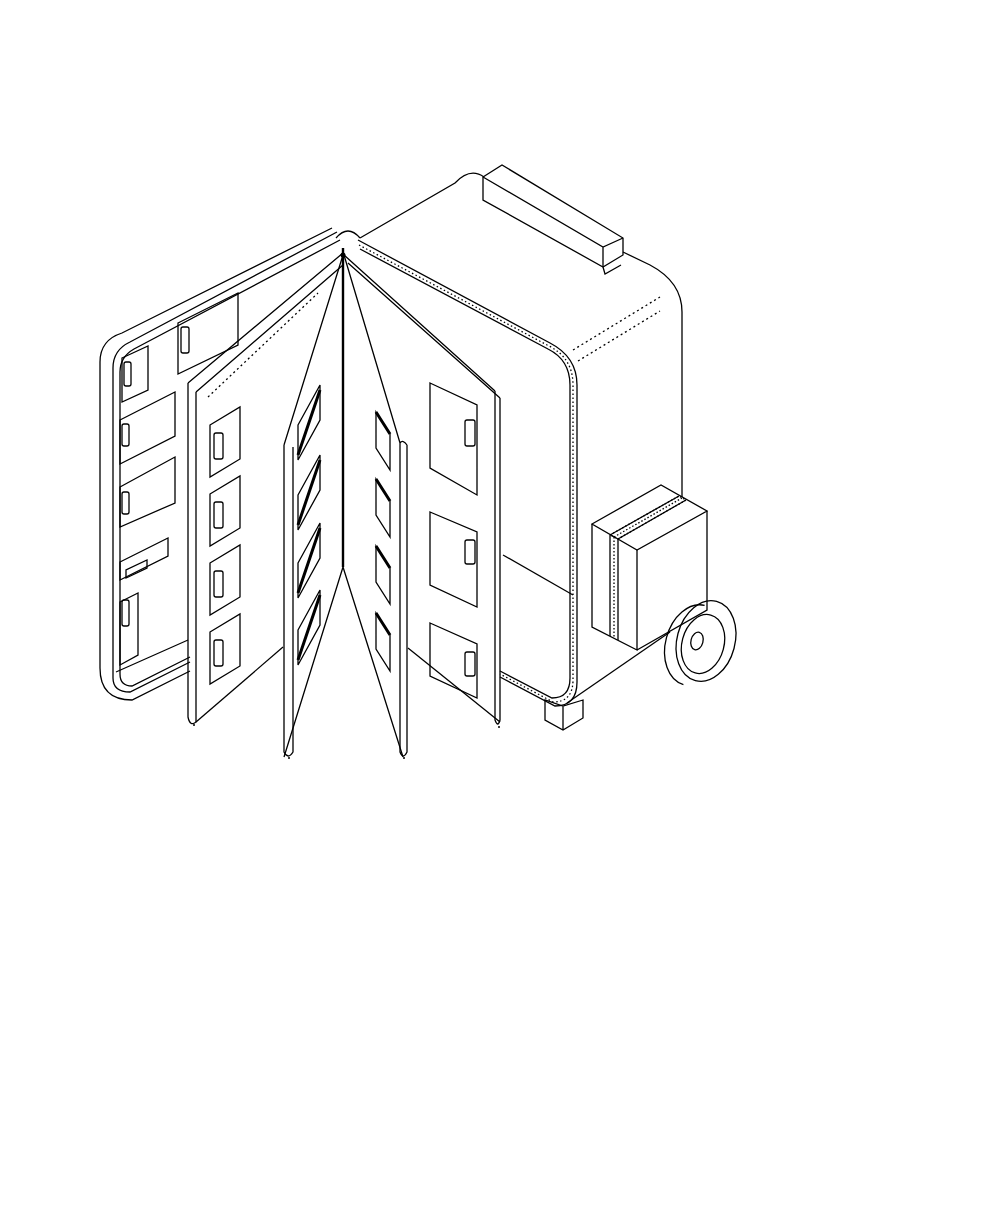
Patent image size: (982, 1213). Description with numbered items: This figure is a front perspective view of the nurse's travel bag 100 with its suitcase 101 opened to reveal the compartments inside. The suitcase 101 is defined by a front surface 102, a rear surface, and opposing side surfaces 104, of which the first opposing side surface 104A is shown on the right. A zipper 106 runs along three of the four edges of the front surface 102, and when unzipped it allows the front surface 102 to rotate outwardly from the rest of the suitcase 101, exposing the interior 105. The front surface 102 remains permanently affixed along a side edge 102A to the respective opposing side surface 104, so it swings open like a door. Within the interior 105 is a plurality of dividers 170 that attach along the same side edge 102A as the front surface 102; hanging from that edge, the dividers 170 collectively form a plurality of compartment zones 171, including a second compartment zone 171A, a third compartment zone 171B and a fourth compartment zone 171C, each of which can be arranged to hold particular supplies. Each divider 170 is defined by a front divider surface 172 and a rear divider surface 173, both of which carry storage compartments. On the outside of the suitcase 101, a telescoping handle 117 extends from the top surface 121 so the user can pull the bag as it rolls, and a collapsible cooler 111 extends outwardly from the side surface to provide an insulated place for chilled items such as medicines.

The nurse's travel bag 100 is at (114, 113).
The suitcase 101 is at (641, 263).
The front surface 102 is at (104, 347).
The side edge 102A is at (328, 214).
The opposing side surfaces 104 is at (726, 477).
The first opposing side surface 104A is at (660, 402).
The interior 105 is at (480, 320).
The zipper 106 is at (219, 302).
The collapsible cooler 111 is at (697, 536).
The telescoping handle 117 is at (571, 207).
The top surface 121 is at (459, 198).
The dividers 170 is at (212, 731).
The compartment zones 171 is at (532, 655).
The second compartment zone 171A is at (240, 733).
The third compartment zone 171B is at (334, 725).
The fourth compartment zone 171C is at (440, 727).
The front divider surface 172 is at (382, 310).
The rear divider surface 173 is at (258, 385).